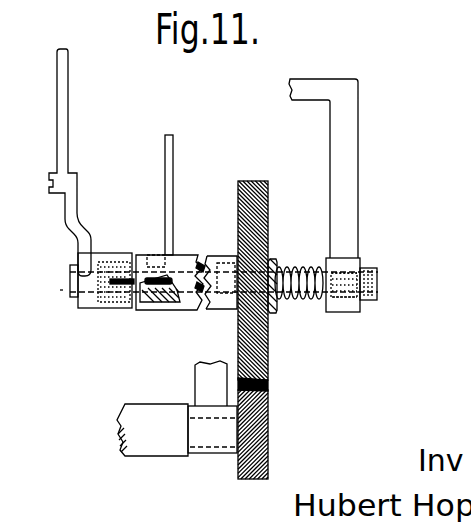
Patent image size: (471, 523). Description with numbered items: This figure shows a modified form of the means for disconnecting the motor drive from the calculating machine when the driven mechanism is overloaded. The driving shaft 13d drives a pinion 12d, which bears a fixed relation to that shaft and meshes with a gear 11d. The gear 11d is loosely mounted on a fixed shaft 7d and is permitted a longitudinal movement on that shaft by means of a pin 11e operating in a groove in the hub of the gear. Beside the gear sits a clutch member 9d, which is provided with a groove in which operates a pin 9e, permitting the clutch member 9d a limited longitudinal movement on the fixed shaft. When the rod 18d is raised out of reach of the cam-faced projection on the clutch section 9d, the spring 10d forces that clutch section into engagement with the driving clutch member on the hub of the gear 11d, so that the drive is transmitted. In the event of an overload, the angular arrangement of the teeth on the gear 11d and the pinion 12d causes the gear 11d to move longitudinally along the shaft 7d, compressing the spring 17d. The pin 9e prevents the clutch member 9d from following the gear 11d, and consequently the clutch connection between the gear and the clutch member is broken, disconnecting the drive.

The fixed shaft 7d is at (380, 283).
The clutch member 9d is at (188, 303).
The pin 9e is at (156, 256).
The spring 10d is at (115, 305).
The gear 11d is at (270, 345).
The pin 11e is at (228, 258).
The pinion 12d is at (268, 438).
The driving shaft 13d is at (178, 438).
The spring 17d is at (326, 228).
The rod 18d is at (173, 153).